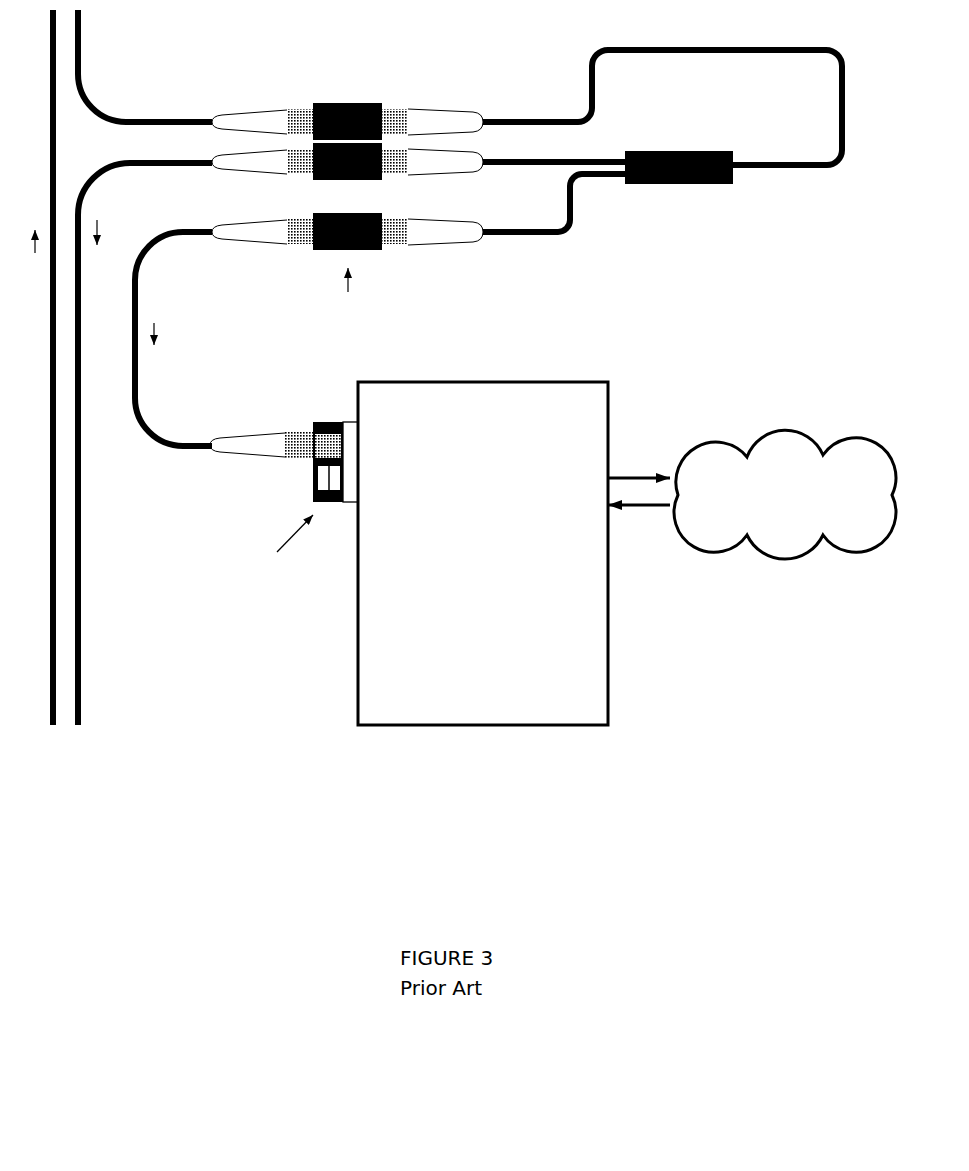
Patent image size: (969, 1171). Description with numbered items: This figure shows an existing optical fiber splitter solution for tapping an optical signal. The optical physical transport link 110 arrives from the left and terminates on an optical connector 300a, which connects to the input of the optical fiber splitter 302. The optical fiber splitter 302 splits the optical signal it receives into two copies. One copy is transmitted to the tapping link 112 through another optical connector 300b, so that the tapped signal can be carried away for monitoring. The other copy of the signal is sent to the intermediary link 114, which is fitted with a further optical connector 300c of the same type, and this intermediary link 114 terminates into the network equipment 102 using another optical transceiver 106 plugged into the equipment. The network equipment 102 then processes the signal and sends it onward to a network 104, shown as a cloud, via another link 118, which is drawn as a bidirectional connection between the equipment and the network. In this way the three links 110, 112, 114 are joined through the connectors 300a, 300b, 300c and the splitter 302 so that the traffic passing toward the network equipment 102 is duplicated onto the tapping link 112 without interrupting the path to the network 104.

The optical physical transport link 110 is at (153, 120).
The tapping link 112 is at (130, 167).
The intermediary link 114 is at (206, 236).
The optical connector 300a is at (364, 104).
The optical connector 300b is at (380, 181).
The optical connector 300c is at (370, 250).
The optical fiber splitter 302 is at (677, 186).
The network equipment 102 is at (607, 640).
The optical transceiver 106 is at (329, 504).
The link 118 is at (635, 476).
The network 104 is at (844, 548).